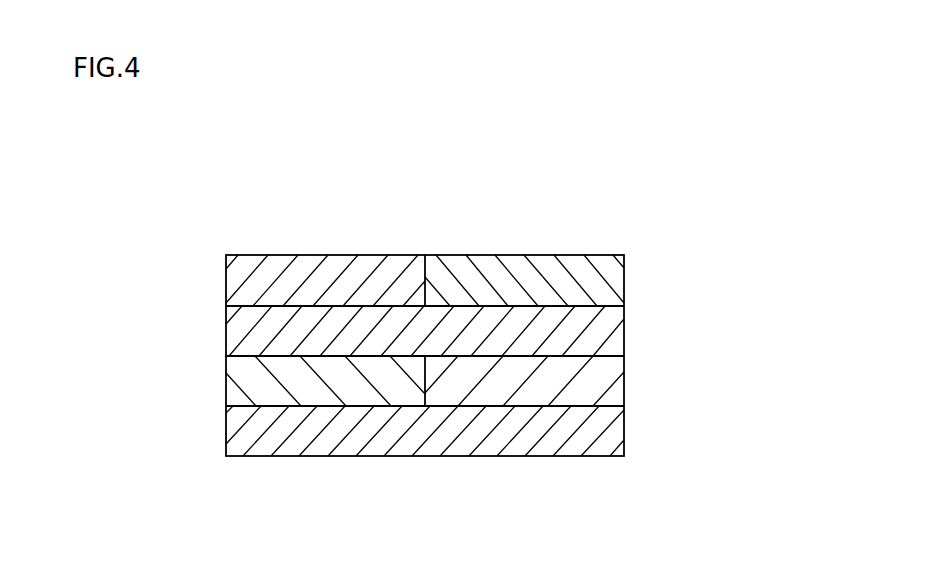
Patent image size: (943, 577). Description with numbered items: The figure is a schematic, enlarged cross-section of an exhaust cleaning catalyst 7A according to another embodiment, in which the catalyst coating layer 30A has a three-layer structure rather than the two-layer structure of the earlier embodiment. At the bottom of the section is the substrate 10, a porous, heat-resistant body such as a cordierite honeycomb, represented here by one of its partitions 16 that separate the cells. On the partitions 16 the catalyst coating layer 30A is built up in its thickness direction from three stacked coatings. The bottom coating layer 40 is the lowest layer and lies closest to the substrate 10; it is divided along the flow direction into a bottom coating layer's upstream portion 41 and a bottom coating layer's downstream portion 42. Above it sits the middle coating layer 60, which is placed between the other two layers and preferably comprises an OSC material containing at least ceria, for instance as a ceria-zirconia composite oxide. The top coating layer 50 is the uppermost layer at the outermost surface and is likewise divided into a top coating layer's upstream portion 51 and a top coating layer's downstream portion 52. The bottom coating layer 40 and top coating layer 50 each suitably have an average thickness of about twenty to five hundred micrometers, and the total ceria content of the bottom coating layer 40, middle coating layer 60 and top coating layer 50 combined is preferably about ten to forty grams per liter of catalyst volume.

The exhaust cleaning catalyst 7A is at (472, 212).
The substrate 10 is at (397, 460).
The partitions 16 is at (535, 458).
The catalyst coating layer 30A is at (729, 253).
The bottom coating layer 40 is at (630, 372).
The bottom coating layer's upstream portion 41 is at (225, 388).
The bottom coating layer's downstream portion 42 is at (625, 397).
The top coating layer 50 is at (630, 277).
The top coating layer's upstream portion 51 is at (227, 293).
The top coating layer's downstream portion 52 is at (558, 257).
The middle coating layer 60 is at (630, 323).